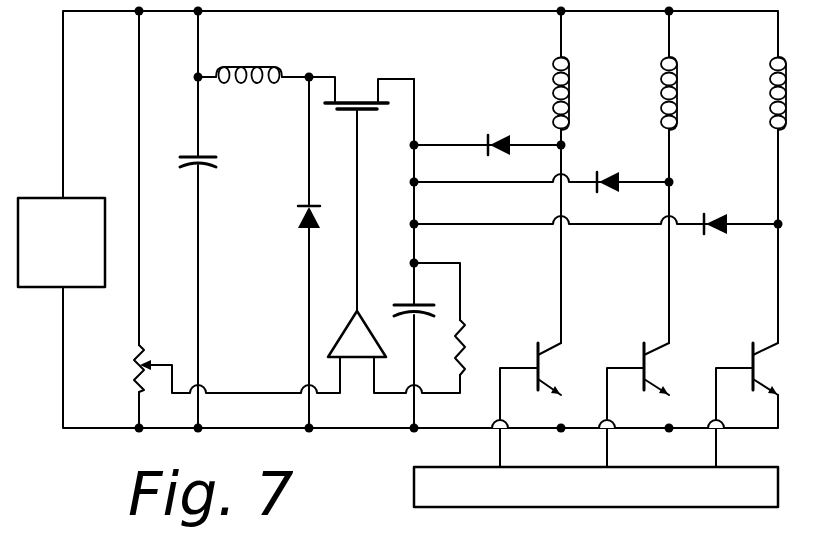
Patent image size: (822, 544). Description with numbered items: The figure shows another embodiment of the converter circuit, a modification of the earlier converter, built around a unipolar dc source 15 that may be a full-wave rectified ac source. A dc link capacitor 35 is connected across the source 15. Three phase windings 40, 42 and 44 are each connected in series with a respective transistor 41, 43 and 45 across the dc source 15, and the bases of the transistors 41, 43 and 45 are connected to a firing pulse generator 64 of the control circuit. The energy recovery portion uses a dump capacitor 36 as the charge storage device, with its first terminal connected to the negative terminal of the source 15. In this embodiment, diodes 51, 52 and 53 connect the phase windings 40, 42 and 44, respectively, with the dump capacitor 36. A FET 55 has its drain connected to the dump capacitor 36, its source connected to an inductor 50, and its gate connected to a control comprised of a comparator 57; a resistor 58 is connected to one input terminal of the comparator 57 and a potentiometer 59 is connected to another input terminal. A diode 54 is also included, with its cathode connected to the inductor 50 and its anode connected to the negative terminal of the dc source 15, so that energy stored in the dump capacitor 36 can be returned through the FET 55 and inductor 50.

The unipolar dc source 15 is at (53, 275).
The dc link capacitor 35 is at (204, 170).
The dump capacitor 36 is at (420, 318).
The phase winding 40 is at (550, 74).
The transistor 41 is at (536, 356).
The phase winding 42 is at (661, 74).
The transistor 43 is at (642, 356).
The phase winding 44 is at (768, 78).
The transistor 45 is at (742, 356).
The inductor 50 is at (254, 68).
The diode 51 is at (500, 139).
The diode 52 is at (610, 176).
The diode 53 is at (720, 212).
The diode 54 is at (296, 220).
The FET 55 is at (364, 97).
The comparator 57 is at (348, 332).
The resistor 58 is at (466, 332).
The potentiometer 59 is at (134, 357).
The firing pulse generator 64 is at (586, 497).